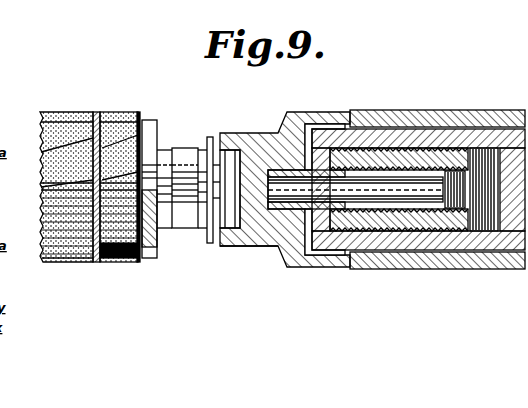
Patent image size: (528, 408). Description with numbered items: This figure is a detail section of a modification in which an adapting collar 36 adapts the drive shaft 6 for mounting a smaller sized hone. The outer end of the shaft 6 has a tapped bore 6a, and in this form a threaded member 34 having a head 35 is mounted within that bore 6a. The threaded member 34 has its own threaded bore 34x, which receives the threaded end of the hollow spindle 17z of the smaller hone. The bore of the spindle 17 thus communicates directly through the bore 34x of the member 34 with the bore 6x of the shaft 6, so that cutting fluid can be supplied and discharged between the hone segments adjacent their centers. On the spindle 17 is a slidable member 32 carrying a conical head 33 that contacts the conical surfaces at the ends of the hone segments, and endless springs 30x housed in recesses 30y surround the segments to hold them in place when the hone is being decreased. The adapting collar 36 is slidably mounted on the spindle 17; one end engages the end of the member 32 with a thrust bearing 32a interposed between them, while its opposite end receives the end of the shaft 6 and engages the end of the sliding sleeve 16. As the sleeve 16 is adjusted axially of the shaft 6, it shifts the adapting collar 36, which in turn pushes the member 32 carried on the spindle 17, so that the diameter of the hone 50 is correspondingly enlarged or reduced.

The stacked laminated body 50 is at (110, 105).
The endless springs 30x is at (95, 258).
The recesses 30y is at (55, 258).
The conical head 33 is at (155, 122).
The slidable member 32 is at (185, 149).
The thrust bearing 32a is at (232, 147).
The head 35 is at (324, 130).
The sliding sleeve 16 is at (437, 124).
The tapped bore 6a is at (377, 142).
The shaft 6 is at (388, 246).
The threaded bore 34x is at (456, 200).
The threaded member 34 is at (445, 158).
The bore 6x is at (512, 198).
The hollow spindle 17z is at (352, 192).
The spindle 17 is at (290, 200).
The adapting collar 36 is at (258, 232).